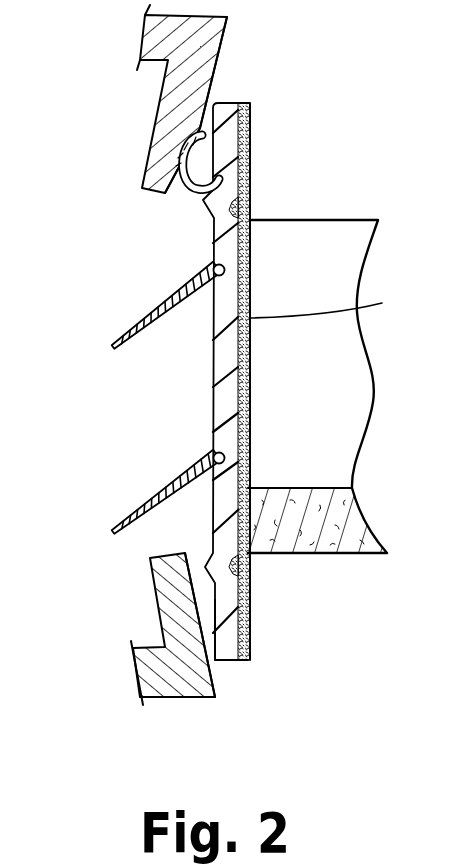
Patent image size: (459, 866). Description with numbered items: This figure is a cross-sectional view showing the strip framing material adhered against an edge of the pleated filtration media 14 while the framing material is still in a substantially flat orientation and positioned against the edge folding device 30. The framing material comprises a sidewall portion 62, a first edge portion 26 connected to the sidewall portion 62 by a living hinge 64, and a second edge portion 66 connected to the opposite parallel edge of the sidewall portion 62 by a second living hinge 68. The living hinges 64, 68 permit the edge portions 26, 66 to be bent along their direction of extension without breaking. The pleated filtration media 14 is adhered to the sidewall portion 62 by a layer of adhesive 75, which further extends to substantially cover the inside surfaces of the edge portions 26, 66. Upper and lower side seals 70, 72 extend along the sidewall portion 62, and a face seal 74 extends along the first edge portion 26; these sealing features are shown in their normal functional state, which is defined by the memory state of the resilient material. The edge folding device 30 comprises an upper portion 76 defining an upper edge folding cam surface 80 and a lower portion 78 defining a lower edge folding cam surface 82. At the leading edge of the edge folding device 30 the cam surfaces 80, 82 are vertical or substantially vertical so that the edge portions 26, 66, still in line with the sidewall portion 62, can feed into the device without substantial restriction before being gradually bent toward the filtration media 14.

The pleated filtration media 14 is at (356, 432).
The first edge portion 26 is at (230, 156).
The edge folding device 30 is at (128, 134).
The sidewall portion 62 is at (225, 368).
The living hinge 64 is at (256, 205).
The second edge portion 66 is at (233, 638).
The second living hinge 68 is at (255, 567).
The upper side seal 70 is at (131, 327).
The lower side seal 72 is at (136, 502).
The face seal 74 is at (200, 198).
The layer of adhesive 75 is at (382, 303).
The upper portion 76 is at (223, 28).
The lower portion 78 is at (176, 693).
The upper edge folding cam surface 80 is at (212, 96).
The lower edge folding cam surface 82 is at (217, 676).